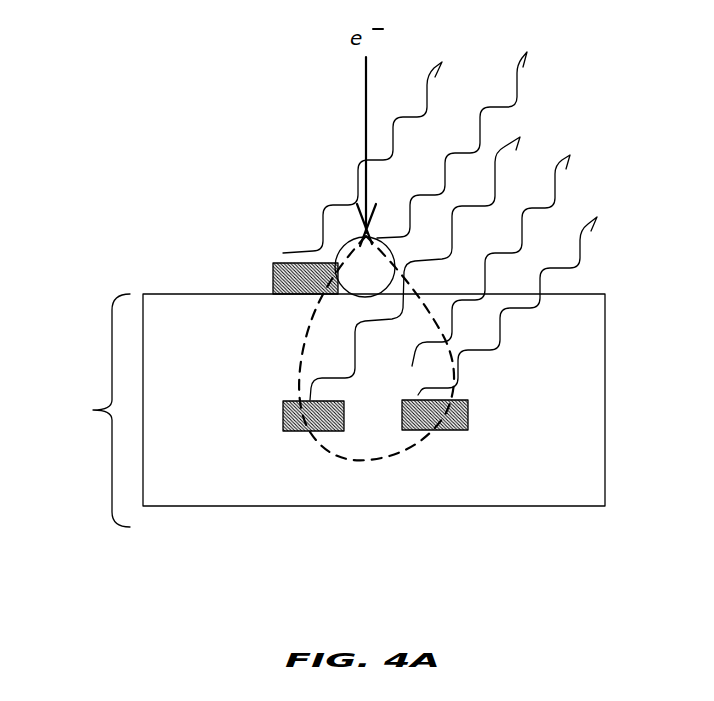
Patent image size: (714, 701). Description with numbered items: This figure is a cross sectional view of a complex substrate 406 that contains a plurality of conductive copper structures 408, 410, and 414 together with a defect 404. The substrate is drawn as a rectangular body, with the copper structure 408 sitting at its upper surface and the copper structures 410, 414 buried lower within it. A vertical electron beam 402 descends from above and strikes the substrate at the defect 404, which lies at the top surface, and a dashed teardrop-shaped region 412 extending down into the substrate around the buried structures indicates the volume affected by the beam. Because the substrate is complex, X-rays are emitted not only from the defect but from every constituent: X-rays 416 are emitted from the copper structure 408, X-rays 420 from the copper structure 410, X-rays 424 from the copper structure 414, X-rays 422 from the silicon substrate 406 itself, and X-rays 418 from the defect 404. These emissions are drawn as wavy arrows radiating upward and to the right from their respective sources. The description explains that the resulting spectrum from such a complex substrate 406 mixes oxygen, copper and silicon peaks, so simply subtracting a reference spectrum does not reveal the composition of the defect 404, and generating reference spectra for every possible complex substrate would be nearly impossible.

The electron beam 402 is at (360, 132).
The defect 404 is at (334, 259).
The complex substrate 406 is at (325, 410).
The conductive copper structure 408 is at (273, 280).
The conductive copper structure 410 is at (289, 432).
The electron interaction volume 412 is at (398, 458).
The conductive copper structure 414 is at (467, 430).
The X-rays 416 is at (425, 92).
The X-rays 418 is at (515, 83).
The X-rays 420 is at (522, 143).
The X-rays 422 is at (557, 185).
The X-rays 424 is at (582, 260).